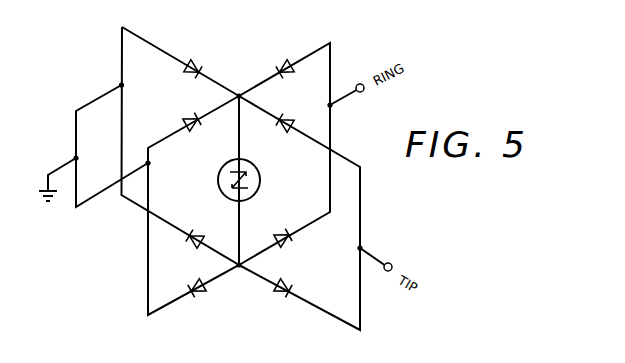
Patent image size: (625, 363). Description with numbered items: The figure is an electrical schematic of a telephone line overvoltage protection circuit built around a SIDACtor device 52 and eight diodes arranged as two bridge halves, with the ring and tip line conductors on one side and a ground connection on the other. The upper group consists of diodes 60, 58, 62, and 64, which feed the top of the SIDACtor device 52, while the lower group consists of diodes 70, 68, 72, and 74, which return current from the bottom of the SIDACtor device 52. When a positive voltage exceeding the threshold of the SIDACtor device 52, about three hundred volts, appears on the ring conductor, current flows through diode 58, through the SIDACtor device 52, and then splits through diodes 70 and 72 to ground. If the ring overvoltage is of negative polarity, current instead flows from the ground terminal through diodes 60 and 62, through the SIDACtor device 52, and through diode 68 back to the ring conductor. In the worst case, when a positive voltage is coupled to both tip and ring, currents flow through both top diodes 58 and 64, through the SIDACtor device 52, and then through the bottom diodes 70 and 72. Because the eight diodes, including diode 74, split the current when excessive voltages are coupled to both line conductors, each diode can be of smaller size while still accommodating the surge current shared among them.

The SIDACtor device 52 is at (217, 178).
The diode 58 is at (276, 64).
The diode 60 is at (201, 64).
The diode 62 is at (190, 116).
The diode 64 is at (290, 116).
The diode 68 is at (293, 247).
The diode 70 is at (187, 247).
The diode 72 is at (201, 302).
The diode 74 is at (286, 302).